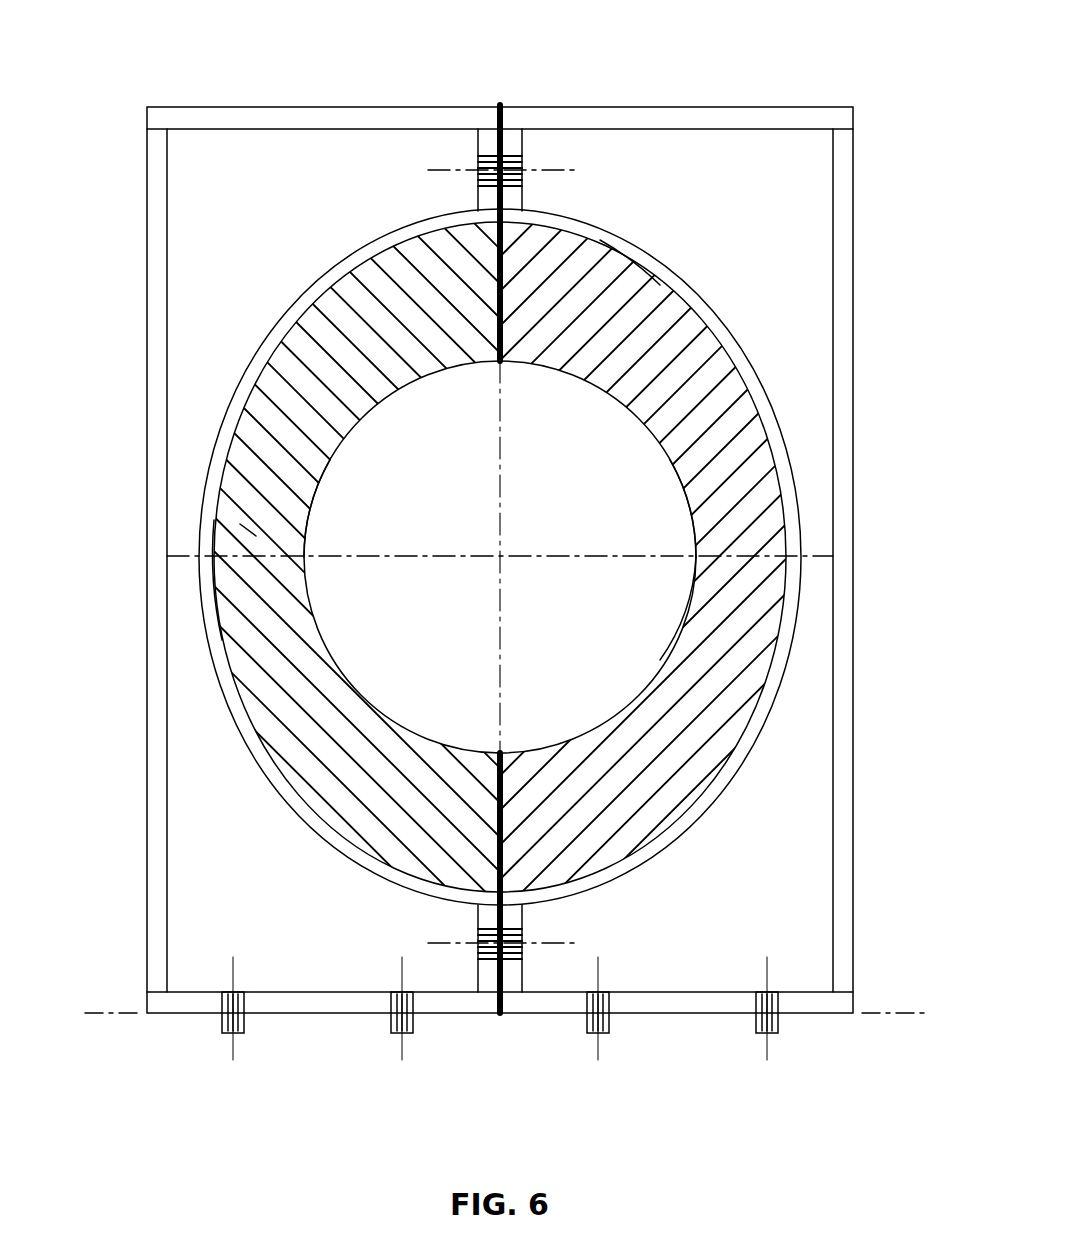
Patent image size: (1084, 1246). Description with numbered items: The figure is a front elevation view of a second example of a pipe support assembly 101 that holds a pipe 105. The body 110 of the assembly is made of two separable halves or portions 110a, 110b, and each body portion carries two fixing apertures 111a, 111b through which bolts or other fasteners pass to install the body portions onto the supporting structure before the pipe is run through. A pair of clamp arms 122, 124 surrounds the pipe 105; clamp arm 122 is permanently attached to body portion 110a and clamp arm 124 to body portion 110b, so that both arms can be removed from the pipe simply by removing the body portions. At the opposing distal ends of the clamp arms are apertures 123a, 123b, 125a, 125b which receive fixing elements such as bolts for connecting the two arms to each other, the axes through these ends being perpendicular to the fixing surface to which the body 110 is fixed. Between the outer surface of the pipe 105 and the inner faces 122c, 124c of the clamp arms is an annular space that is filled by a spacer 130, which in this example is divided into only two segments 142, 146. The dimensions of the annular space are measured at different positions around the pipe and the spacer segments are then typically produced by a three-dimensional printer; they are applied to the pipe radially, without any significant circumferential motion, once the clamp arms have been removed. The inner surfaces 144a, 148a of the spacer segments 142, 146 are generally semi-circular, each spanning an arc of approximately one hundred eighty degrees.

The pipe support assembly 101 is at (130, 166).
The pipe 105 is at (697, 363).
The body 110 is at (149, 380).
The body portion 110a is at (342, 122).
The body portion 110b is at (577, 120).
The fixing aperture 111a is at (398, 990).
The fixing aperture 111b is at (604, 990).
The clamp arm 122 is at (293, 320).
The inner face 122c is at (220, 612).
The aperture 123a is at (480, 163).
The aperture 123b is at (478, 932).
The clamp arm 124 is at (770, 413).
The inner face 124c is at (650, 280).
The aperture 125a is at (523, 168).
The aperture 125b is at (522, 932).
The spacer 130 is at (362, 300).
The spacer segment 142 is at (253, 532).
The inner surface 144a is at (328, 476).
The spacer segment 146 is at (753, 498).
The inner surface 148a is at (700, 512).